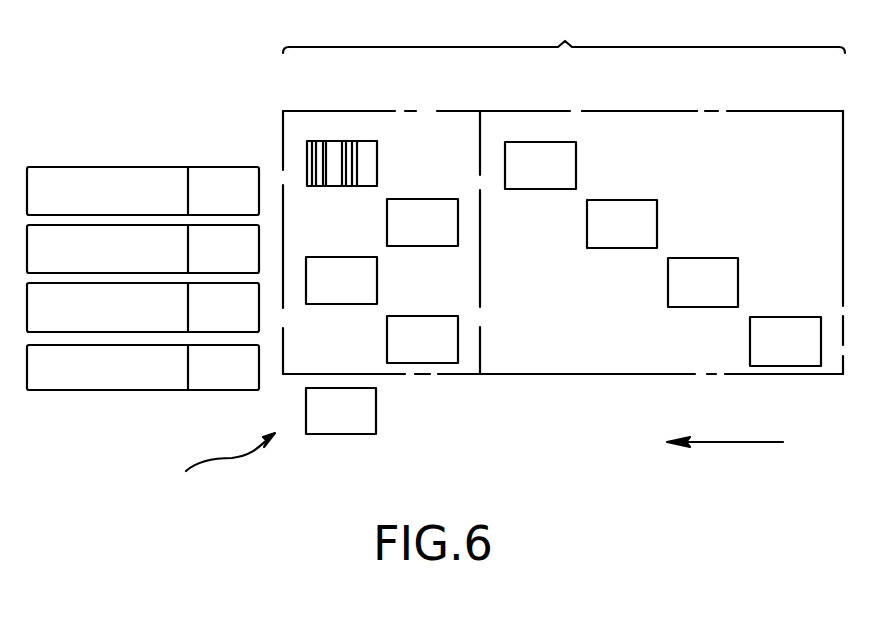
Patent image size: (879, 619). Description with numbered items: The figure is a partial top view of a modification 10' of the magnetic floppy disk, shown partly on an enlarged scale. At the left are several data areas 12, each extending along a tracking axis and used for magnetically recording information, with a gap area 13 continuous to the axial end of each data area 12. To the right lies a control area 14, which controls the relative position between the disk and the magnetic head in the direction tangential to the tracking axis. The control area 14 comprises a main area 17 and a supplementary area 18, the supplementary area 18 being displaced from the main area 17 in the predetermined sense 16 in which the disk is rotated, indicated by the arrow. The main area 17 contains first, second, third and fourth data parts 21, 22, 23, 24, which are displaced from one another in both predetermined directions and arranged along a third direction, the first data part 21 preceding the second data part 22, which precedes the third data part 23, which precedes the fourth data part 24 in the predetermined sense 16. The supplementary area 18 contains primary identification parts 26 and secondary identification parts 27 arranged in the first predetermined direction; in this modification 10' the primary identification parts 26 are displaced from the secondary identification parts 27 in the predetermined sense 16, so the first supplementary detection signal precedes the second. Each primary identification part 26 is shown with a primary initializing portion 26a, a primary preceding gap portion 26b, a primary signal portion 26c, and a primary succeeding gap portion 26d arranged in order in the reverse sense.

The modification of the magnetic floppy disk 10' is at (206, 466).
The data area 12 is at (103, 167).
The gap area 13 is at (213, 167).
The control area 14 is at (564, 192).
The predetermined sense 16 is at (730, 444).
The main area 17 is at (645, 111).
The supplementary area 18 is at (385, 111).
The first data part 21 is at (577, 164).
The second data part 22 is at (658, 223).
The third data part 23 is at (739, 282).
The fourth data part 24 is at (750, 335).
The primary identification part 26 is at (378, 162).
The primary initializing portion 26a is at (312, 146).
The primary preceding gap portion 26b is at (325, 186).
The primary signal portion 26c is at (344, 141).
The primary succeeding gap portion 26d is at (361, 186).
The secondary identification part 27 is at (387, 230).